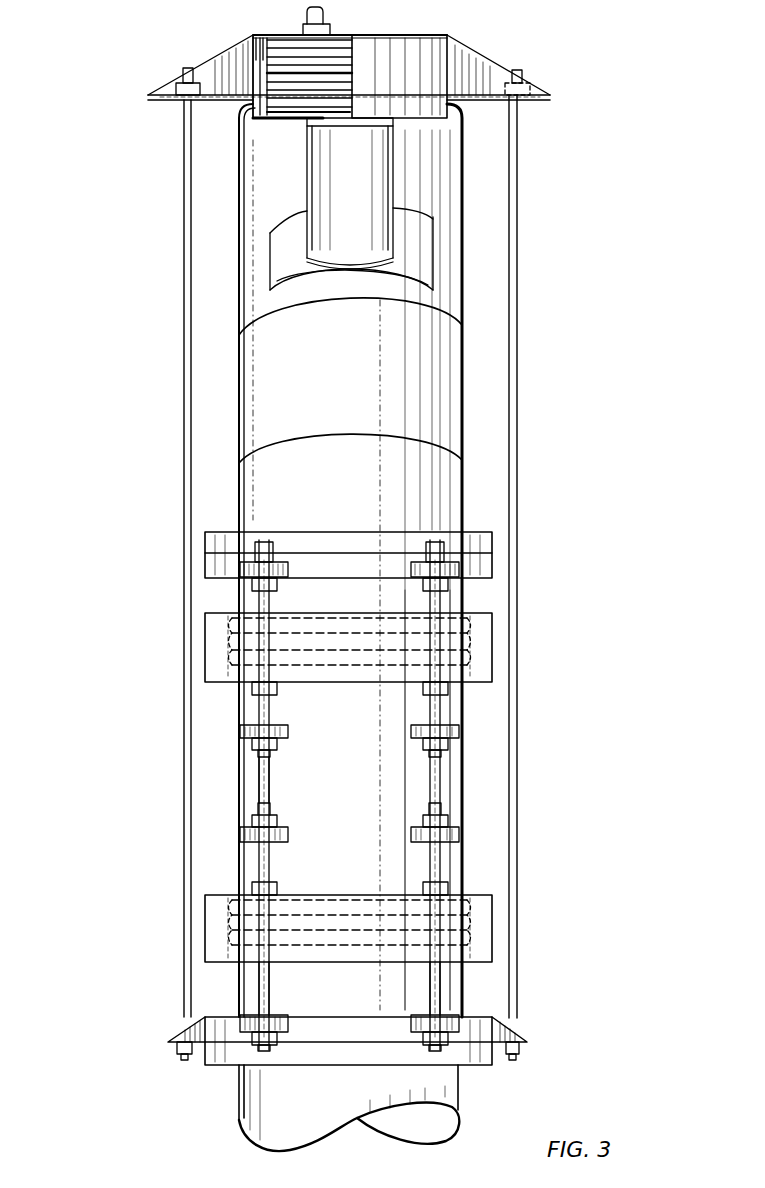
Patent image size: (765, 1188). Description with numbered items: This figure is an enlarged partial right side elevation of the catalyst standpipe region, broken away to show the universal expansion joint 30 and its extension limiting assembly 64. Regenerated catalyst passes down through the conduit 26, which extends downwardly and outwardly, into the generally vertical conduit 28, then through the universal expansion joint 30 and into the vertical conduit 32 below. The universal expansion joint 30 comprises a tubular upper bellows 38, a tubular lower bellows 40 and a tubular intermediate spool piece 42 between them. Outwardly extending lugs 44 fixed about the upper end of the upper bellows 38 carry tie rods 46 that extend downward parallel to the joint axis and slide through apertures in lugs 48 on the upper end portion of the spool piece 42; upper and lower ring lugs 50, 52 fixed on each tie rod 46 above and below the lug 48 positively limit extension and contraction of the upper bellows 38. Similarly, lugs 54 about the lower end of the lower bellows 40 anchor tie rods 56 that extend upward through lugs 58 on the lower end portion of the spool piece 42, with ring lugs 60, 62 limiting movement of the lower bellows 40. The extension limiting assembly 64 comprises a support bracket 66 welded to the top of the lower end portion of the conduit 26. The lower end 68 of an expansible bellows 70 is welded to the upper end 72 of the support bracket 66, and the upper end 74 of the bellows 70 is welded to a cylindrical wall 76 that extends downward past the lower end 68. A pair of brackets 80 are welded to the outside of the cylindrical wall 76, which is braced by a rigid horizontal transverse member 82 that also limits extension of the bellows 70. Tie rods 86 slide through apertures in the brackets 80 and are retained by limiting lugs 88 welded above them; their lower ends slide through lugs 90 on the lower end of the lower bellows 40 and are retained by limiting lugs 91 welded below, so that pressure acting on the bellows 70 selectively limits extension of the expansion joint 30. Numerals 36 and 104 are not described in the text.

The conduit 26 is at (243, 248).
The conduit 28 is at (447, 500).
The universal expansion joint 30 is at (462, 777).
The conduit 32 is at (250, 1098).
The inner tube 36 is at (445, 385).
The upper bellows 38 is at (497, 640).
The lower bellows 40 is at (494, 925).
The intermediate spool piece 42 is at (272, 775).
The lugs 44 is at (245, 572).
The tie rods 46 is at (262, 604).
The lug 48 is at (245, 731).
The upper ring lug 50 is at (258, 690).
The lower ring lug 52 is at (256, 745).
The lugs 54 is at (252, 1025).
The tie rods 56 is at (262, 977).
The lug 58 is at (245, 835).
The upper ring lug 60 is at (272, 813).
The lower ring lug 62 is at (258, 887).
The extension limiting assembly 64 is at (548, 53).
The support bracket 66 is at (372, 205).
The lower end of bellows 68 is at (262, 119).
The expansible bellows 70 is at (283, 80).
The upper end of support bracket 72 is at (318, 126).
The upper end of bellows 74 is at (297, 35).
The cylindrical wall 76 is at (257, 50).
The brackets 80 is at (213, 97).
The transverse member 82 is at (280, 126).
The tie rods 86 is at (185, 350).
The limiting lug 88 is at (183, 73).
The lug 90 is at (195, 1050).
The limiting lug 91 is at (176, 1048).
The fitting 104 is at (323, 12).